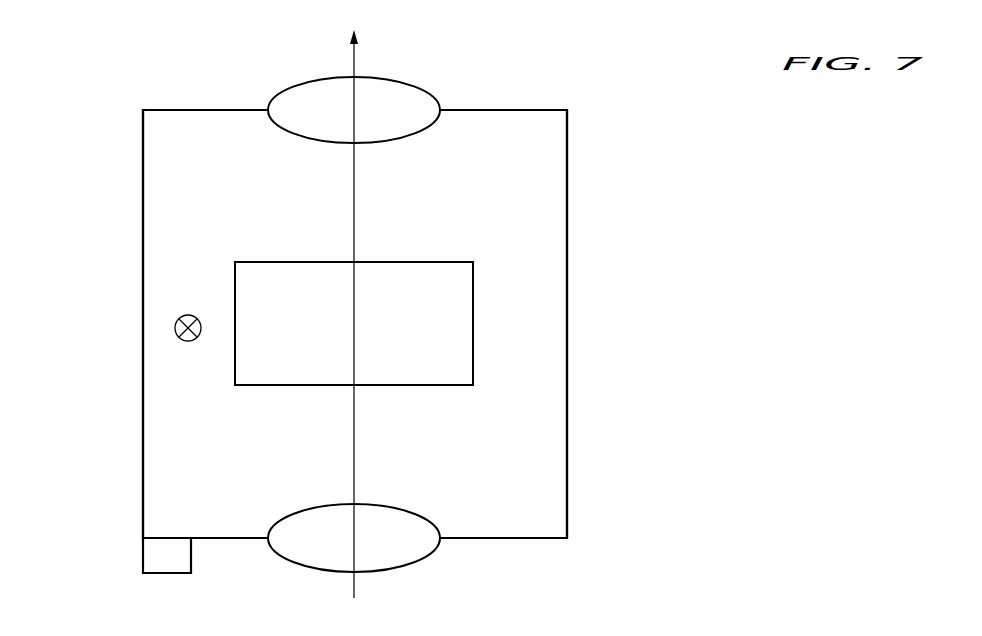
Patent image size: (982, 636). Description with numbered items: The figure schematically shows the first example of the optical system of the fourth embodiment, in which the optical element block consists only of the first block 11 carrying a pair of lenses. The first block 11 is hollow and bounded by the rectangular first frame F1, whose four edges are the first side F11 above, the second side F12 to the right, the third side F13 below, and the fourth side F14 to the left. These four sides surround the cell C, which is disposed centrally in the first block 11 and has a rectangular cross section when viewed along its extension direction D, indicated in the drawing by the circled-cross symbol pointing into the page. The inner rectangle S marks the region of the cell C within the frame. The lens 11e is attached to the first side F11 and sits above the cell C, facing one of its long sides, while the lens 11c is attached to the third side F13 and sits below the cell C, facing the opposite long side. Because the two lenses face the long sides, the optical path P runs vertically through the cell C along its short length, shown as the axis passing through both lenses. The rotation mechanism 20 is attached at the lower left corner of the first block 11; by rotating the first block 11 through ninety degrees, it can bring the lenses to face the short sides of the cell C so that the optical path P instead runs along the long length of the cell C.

The first block 11 is at (267, 48).
The lens 11e is at (417, 83).
The lens 11c is at (402, 508).
The first side F11 is at (495, 110).
The second side F12 is at (567, 218).
The third side F13 is at (493, 538).
The fourth side F14 is at (143, 188).
The first frame F1 is at (572, 118).
The optical path P is at (354, 186).
The cell C is at (383, 262).
The surface region S is at (312, 335).
The extension direction D is at (188, 341).
The rotation mechanism 20 is at (158, 553).